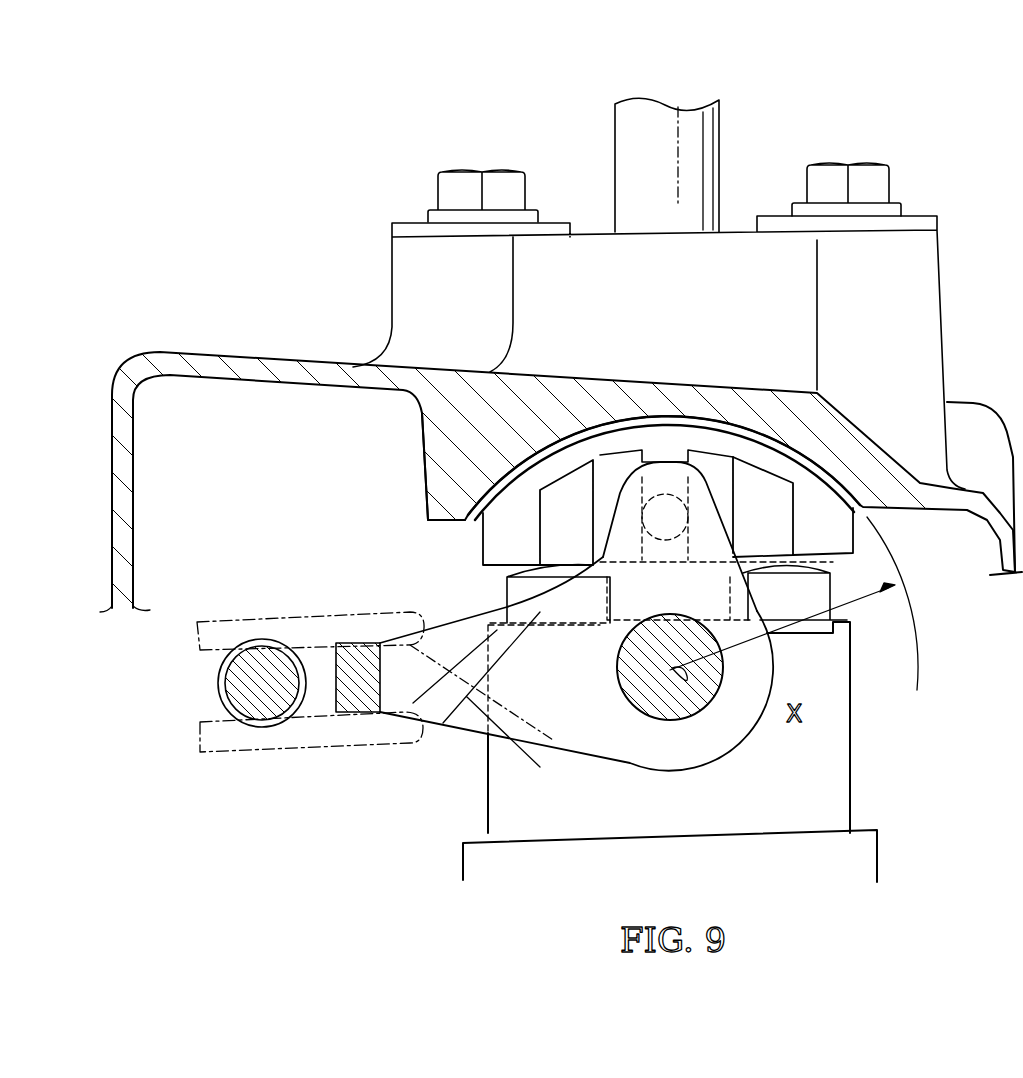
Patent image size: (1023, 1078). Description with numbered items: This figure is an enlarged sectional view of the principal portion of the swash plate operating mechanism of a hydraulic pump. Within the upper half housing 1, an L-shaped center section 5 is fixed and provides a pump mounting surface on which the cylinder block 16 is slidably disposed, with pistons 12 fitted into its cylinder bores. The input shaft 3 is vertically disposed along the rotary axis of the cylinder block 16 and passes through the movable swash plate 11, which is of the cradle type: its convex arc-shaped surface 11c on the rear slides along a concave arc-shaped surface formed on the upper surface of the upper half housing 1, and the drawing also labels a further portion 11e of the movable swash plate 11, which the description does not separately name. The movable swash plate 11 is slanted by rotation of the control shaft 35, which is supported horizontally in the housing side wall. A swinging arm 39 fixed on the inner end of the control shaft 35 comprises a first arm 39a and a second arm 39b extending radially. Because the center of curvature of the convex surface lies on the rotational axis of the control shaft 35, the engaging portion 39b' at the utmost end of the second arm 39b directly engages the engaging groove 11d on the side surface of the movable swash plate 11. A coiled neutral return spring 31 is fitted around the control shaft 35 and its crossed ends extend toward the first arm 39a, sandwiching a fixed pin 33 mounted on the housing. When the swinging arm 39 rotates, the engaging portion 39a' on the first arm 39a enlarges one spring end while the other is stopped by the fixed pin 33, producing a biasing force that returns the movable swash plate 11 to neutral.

The upper half housing 1 is at (178, 350).
The input shaft 3 is at (722, 178).
The center section 5 is at (873, 855).
The movable swash plate 11 is at (490, 533).
The convex arc-shaped surface 11c is at (797, 452).
The engaging groove 11d is at (677, 443).
The housing blocks 11e is at (613, 473).
The pistons 12 is at (513, 578).
The cylinder block 16 is at (845, 760).
The neutral return spring 31 is at (317, 617).
The fixed pin 33 is at (223, 687).
The control shaft 35 is at (662, 710).
The swinging arm 39 is at (747, 733).
The first arm 39a is at (481, 707).
The engaging portion 39a' is at (368, 721).
The second arm 39b is at (695, 536).
The engaging portion 39b' is at (660, 432).